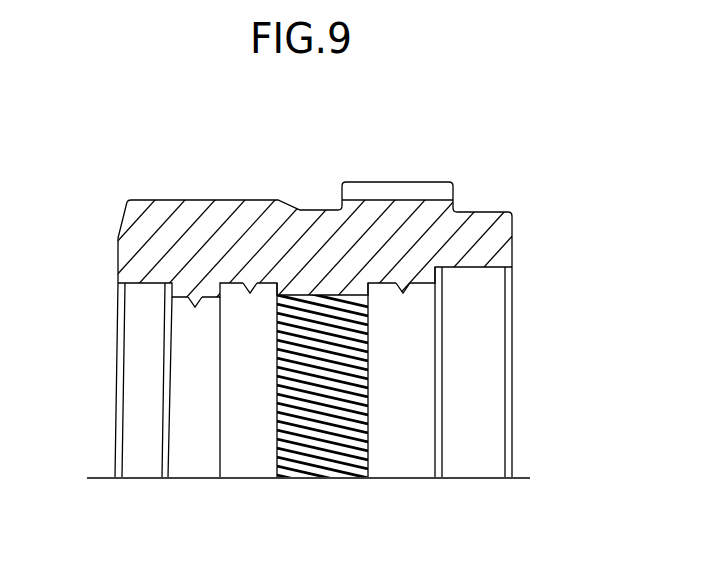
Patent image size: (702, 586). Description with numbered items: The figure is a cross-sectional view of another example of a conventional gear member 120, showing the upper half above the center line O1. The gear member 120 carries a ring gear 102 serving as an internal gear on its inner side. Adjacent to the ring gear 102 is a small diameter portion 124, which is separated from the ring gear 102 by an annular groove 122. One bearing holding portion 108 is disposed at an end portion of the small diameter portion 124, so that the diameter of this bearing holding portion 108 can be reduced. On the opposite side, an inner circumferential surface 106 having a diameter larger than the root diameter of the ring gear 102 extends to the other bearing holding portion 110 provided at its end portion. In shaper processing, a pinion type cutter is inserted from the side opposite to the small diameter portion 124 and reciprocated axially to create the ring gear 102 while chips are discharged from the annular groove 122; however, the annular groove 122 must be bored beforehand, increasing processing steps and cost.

The gear member 120 is at (162, 163).
The small diameter portion 124 is at (196, 302).
The annular groove 122 is at (251, 290).
The inner circumferential surface 106 is at (412, 280).
The bearing holding portion 108 is at (147, 293).
The ring gear 102 is at (268, 451).
The bearing holding portion 110 is at (478, 283).
The center line O1 is at (294, 477).